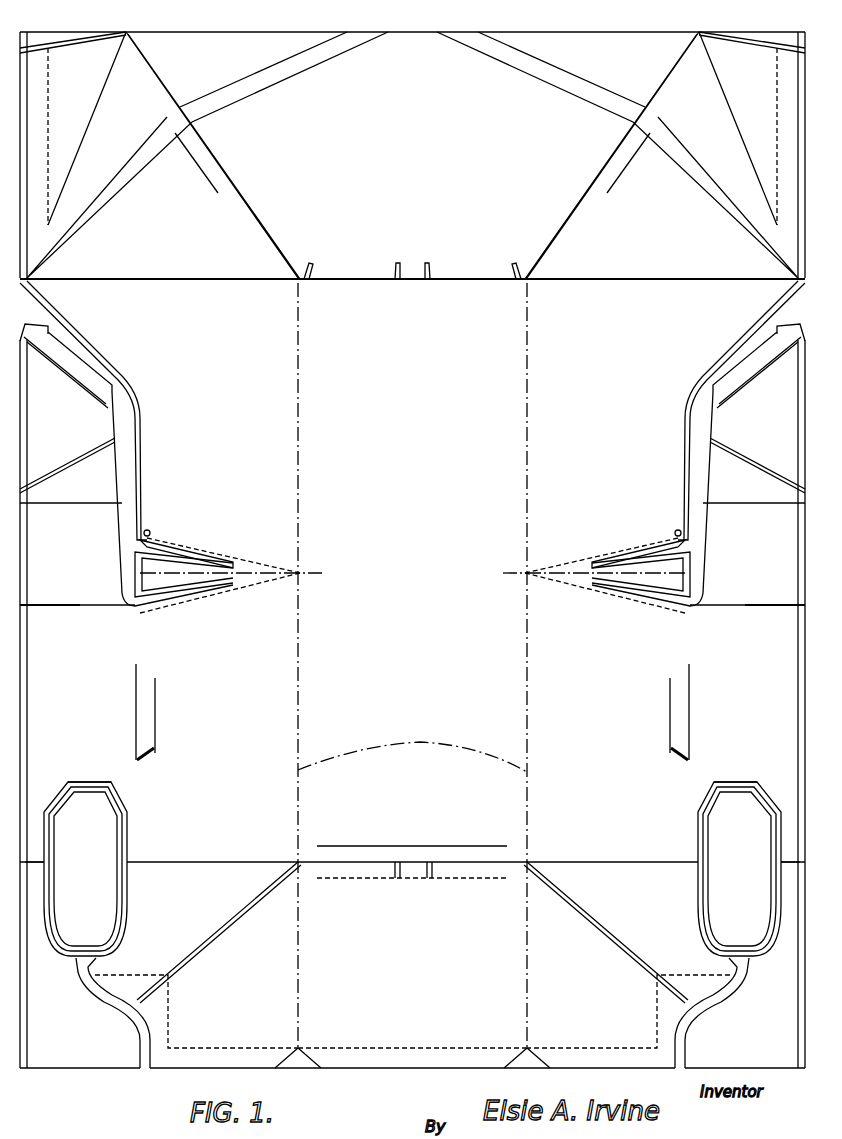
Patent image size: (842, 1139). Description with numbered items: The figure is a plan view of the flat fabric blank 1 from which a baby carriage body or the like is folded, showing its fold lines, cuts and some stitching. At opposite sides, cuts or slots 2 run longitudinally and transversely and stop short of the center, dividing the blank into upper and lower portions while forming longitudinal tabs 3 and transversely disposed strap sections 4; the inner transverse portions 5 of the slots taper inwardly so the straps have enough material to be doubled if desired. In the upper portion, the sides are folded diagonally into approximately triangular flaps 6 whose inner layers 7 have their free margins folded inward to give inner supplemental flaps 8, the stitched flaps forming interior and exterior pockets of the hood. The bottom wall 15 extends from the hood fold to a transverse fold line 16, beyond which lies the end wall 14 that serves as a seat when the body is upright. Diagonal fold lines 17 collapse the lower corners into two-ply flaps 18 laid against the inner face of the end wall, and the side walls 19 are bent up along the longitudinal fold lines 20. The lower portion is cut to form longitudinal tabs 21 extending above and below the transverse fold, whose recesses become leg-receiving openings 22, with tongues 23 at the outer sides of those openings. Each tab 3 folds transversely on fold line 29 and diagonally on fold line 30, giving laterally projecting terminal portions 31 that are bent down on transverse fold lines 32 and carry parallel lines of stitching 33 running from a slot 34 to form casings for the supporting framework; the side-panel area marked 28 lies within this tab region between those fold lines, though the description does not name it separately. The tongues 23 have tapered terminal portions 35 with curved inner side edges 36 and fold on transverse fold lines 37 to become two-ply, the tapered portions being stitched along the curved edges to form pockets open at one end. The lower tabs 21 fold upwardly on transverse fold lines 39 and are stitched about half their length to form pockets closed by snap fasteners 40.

The blank 1 is at (312, 668).
The cuts or slots 2 is at (700, 442).
The longitudinal tabs 3 is at (764, 430).
The strap sections 4 is at (612, 568).
The inner transverse portions of the slots 5 is at (668, 548).
The triangular flaps 6 is at (701, 34).
The inner layers of the triangular flaps 7 is at (675, 238).
The inner supplemental flaps 8 is at (756, 104).
The end wall 14 is at (430, 978).
The bottom wall 15 is at (392, 642).
The transverse fold line 16 is at (460, 860).
The diagonal fold lines 17 is at (614, 940).
The two-ply flaps 18 is at (550, 1004).
The side walls 19 is at (586, 785).
The longitudinal fold lines 20 is at (412, 755).
The longitudinal tabs 21 is at (732, 860).
The leg-receiving openings 22 is at (690, 842).
The tongues 23 is at (790, 840).
The side panel section 28 is at (750, 574).
The transverse fold line 29 is at (760, 506).
The diagonal fold line 30 is at (745, 460).
The laterally extending terminal portions 31 is at (750, 412).
The transverse fold lines 32 is at (756, 606).
The lines of stitching 33 is at (686, 716).
The slot 34 is at (412, 761).
The tapered terminal portions 35 is at (712, 1042).
The curved inner side edges 36 is at (685, 1038).
The transverse fold lines 37 is at (790, 871).
The transverse fold lines 39 is at (738, 784).
The snap fasteners 40 is at (677, 529).